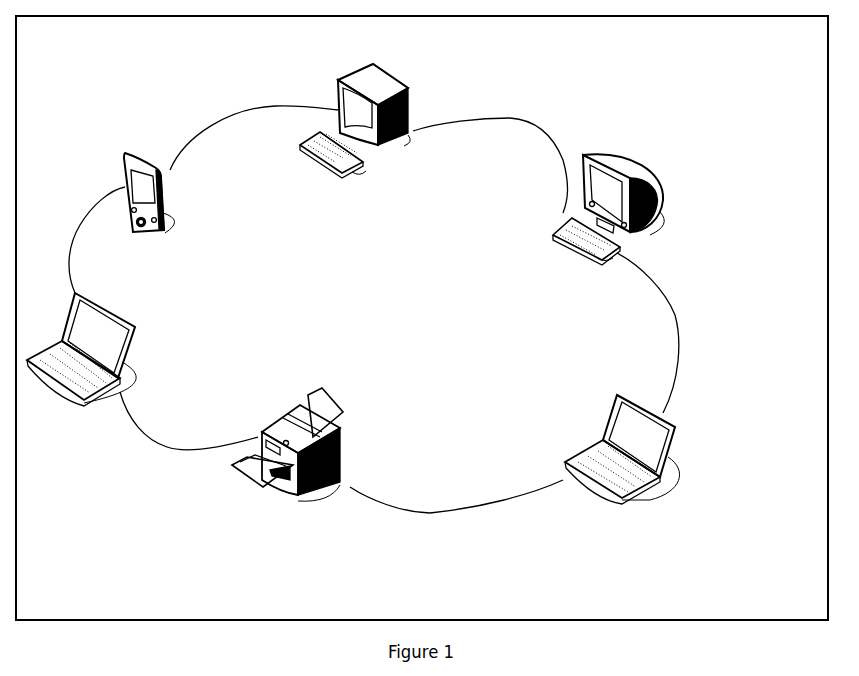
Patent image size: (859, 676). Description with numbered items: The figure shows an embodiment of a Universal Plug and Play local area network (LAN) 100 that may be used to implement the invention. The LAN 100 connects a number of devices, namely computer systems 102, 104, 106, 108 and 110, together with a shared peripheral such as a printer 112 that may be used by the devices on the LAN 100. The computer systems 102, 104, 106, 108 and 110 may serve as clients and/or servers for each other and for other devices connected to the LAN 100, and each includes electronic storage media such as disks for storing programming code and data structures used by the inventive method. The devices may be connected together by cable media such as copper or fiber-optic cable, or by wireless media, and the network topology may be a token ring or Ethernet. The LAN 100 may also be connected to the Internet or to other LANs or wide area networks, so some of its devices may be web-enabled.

The Universal Plug and Play local area network 100 is at (374, 361).
The computer system 102 is at (81, 357).
The computer system 104 is at (149, 204).
The computer system 106 is at (355, 126).
The computer system 108 is at (622, 461).
The computer system 110 is at (608, 217).
The printer 112 is at (287, 454).